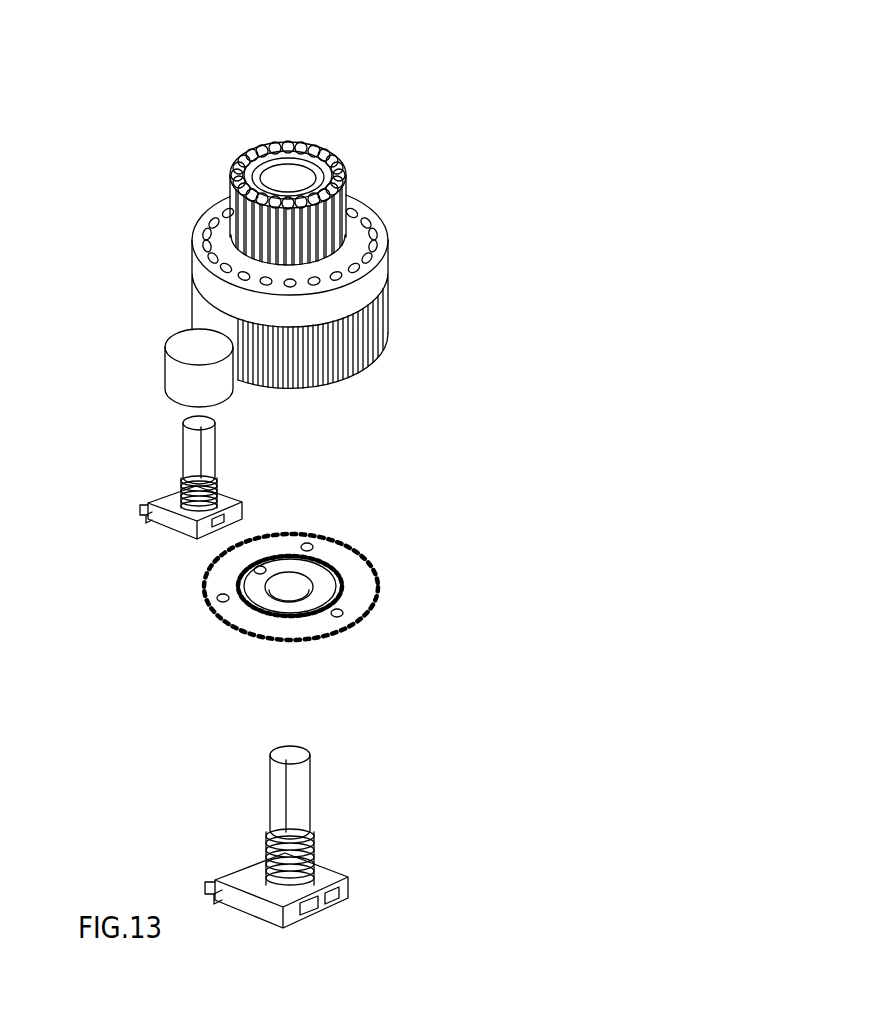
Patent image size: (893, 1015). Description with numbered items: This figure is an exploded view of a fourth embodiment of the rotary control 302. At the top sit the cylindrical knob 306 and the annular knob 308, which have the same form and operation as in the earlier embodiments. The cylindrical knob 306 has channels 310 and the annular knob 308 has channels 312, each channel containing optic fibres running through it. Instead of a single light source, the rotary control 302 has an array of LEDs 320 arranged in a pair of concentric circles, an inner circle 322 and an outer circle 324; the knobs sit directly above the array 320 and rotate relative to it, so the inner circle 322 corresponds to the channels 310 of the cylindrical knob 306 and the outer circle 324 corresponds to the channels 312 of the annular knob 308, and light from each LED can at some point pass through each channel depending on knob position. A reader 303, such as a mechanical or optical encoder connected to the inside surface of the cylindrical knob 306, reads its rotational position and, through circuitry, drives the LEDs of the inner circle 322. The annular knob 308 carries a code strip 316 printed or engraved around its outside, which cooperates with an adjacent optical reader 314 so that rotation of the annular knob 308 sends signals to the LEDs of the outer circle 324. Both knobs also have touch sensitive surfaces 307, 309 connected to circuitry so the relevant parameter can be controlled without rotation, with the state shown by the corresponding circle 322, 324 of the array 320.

The rotary control 302 is at (338, 452).
The reader 303 is at (310, 835).
The cylindrical knob 306 is at (300, 147).
The touch sensitive surface 307 is at (338, 160).
The annular knob 308 is at (247, 222).
The touch sensitive surface 309 is at (197, 296).
The channels 310 is at (240, 150).
The channels 312 is at (362, 210).
The optical reader 314 is at (185, 460).
The code strip 316 is at (385, 340).
The array of LEDs 320 is at (322, 587).
The inner circle 322 is at (240, 597).
The outer circle 324 is at (247, 630).